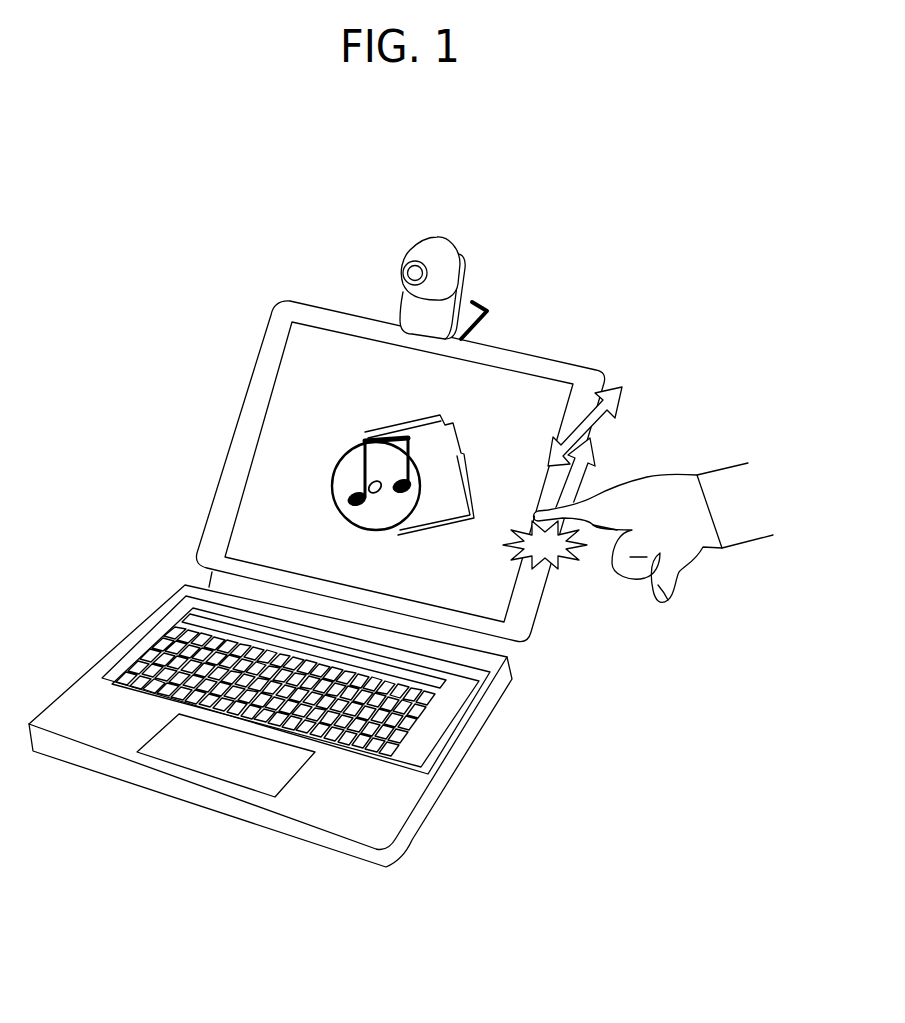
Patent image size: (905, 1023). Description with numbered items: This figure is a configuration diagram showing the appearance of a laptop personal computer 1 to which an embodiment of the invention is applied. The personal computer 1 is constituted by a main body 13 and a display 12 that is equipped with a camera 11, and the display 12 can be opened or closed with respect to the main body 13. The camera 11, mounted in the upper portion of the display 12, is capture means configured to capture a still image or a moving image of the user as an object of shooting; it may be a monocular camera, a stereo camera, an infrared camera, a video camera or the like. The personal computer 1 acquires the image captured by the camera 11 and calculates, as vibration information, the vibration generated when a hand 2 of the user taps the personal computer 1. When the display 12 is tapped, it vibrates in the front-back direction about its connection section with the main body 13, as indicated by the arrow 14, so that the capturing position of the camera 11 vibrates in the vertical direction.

The personal computer 1 is at (443, 797).
The hand 2 is at (688, 555).
The camera 11 is at (432, 246).
The display 12 is at (530, 350).
The main body 13 is at (388, 825).
The arrow 14 is at (623, 391).